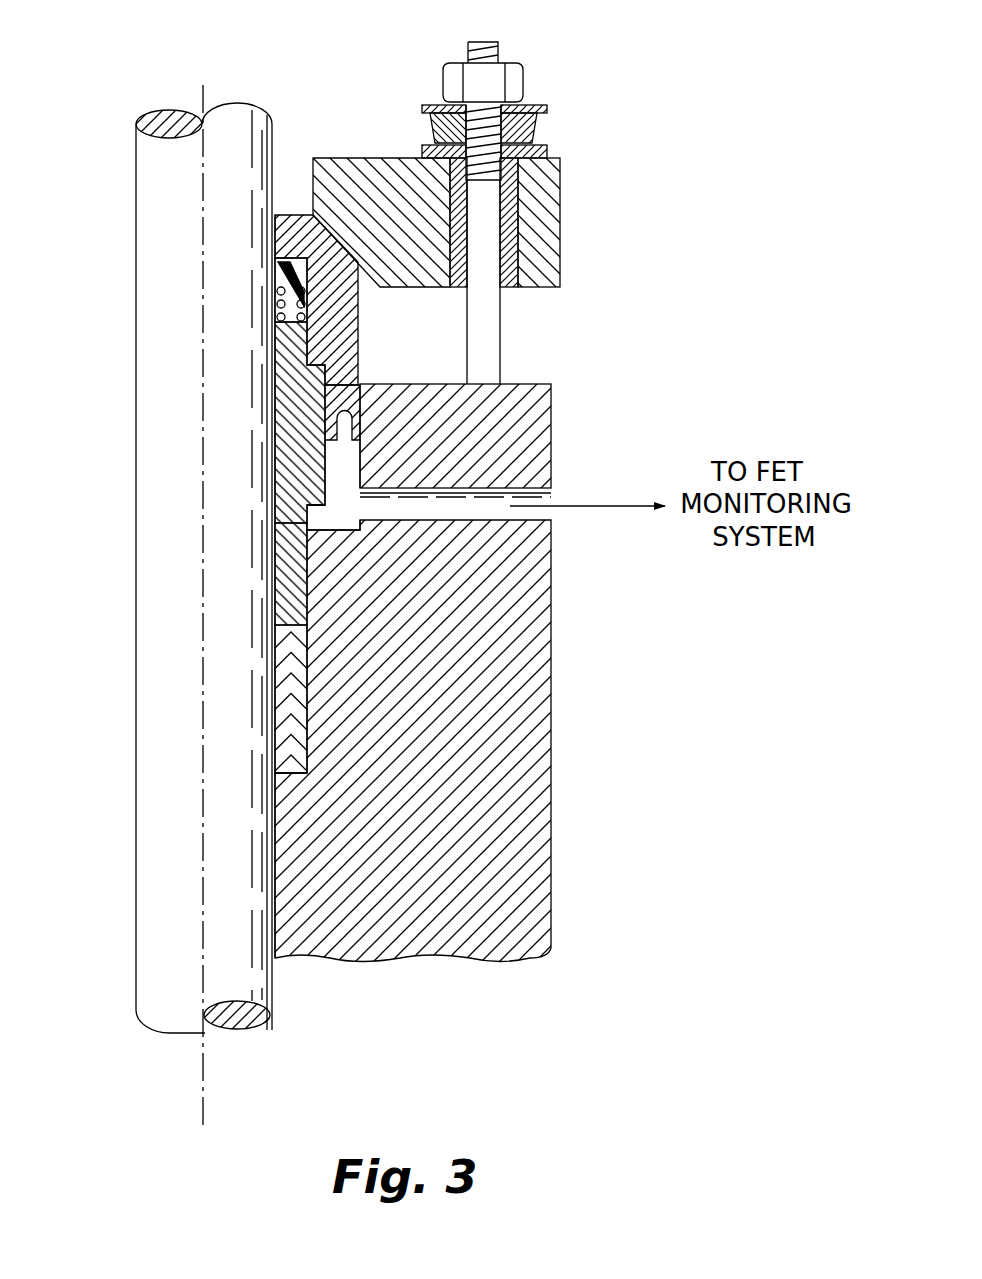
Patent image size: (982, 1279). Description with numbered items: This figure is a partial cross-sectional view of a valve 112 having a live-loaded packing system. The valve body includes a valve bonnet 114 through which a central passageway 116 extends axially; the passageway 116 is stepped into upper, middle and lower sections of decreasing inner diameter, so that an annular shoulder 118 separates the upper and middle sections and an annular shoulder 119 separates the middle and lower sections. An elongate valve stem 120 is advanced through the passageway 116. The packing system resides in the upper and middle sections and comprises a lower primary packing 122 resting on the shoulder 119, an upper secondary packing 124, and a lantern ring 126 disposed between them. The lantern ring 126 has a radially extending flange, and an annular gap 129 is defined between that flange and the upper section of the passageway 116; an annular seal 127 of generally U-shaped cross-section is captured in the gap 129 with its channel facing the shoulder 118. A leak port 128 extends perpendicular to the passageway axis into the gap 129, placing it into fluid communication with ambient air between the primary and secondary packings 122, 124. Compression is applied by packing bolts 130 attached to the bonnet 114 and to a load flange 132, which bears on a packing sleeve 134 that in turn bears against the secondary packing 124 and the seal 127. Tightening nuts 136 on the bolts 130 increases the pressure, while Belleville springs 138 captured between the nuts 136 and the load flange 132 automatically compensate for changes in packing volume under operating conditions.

The valve 112 is at (583, 172).
The valve bonnet 114 is at (535, 415).
The central passageway 116 is at (272, 836).
The annular shoulder 118 is at (290, 525).
The annular shoulder 119 is at (277, 770).
The valve stem 120 is at (153, 958).
The primary packing 122 is at (278, 725).
The secondary packing 124 is at (283, 270).
The lantern ring 126 is at (307, 507).
The annular seal 127 is at (328, 402).
The leak port 128 is at (535, 492).
The annular gap 129 is at (335, 470).
The packing bolt 130 is at (487, 215).
The load flange 132 is at (350, 175).
The packing sleeve 134 is at (293, 240).
The nut 136 is at (520, 80).
The Belleville spring 138 is at (525, 120).